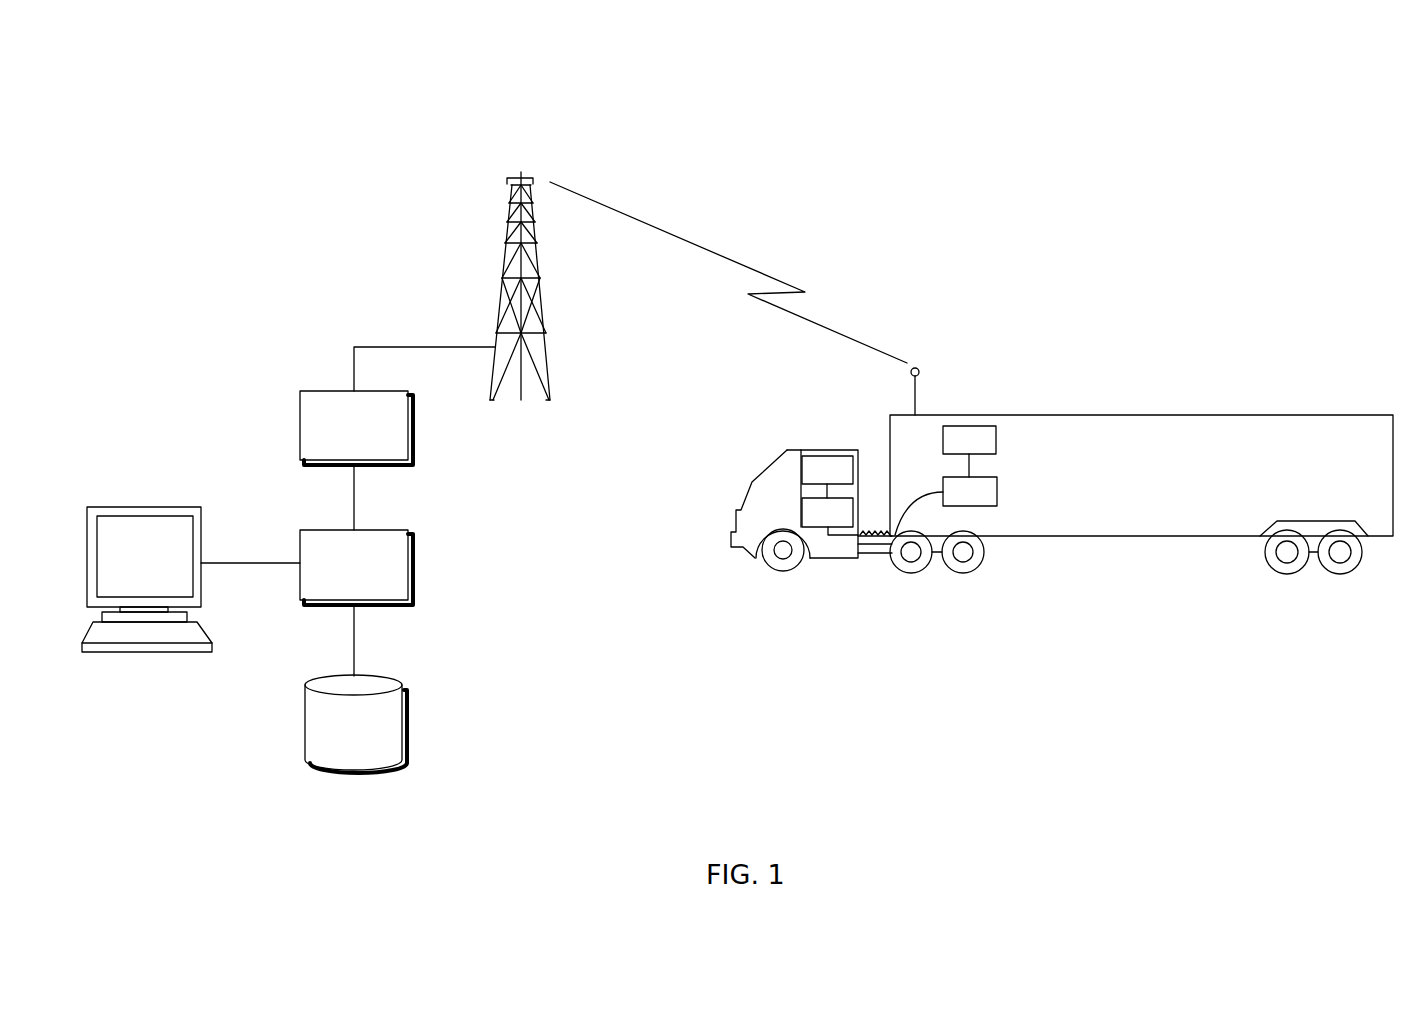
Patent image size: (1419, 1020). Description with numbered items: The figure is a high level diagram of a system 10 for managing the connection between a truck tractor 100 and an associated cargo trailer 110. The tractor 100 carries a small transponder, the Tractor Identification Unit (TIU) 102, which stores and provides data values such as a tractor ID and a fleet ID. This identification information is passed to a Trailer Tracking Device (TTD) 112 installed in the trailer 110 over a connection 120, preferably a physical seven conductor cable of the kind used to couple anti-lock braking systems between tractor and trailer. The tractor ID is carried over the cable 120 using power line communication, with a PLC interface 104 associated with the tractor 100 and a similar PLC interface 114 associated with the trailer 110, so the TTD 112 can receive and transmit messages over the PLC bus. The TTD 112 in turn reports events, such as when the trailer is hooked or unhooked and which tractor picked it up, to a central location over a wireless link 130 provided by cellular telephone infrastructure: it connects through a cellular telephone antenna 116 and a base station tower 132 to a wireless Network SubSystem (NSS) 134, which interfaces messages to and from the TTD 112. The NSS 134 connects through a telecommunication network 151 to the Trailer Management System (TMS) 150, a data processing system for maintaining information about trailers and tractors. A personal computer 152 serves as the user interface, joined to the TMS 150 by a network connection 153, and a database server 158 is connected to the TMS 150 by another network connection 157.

The system 10 is at (1131, 69).
The truck tractor 100 is at (756, 484).
The Tractor Identification Unit (TIU) 102 is at (802, 465).
The PLC interface 104 is at (802, 510).
The cargo trailer 110 is at (1141, 471).
The Trailer Tracking Device (TTD) 112 is at (996, 437).
The PLC interface 114 is at (997, 490).
The cellular telephone antenna 116 is at (920, 377).
The connection 120 is at (892, 533).
The wireless link 130 is at (737, 262).
The communication tower 132 is at (507, 232).
The wireless Network SubSystem (NSS) 134 is at (413, 442).
The Trailer Management System (TMS) 150 is at (413, 558).
The telecommunication network 151 is at (354, 492).
The personal computer 152 is at (142, 507).
The network connection 153 is at (223, 560).
The network connection 157 is at (354, 630).
The database server 158 is at (407, 718).